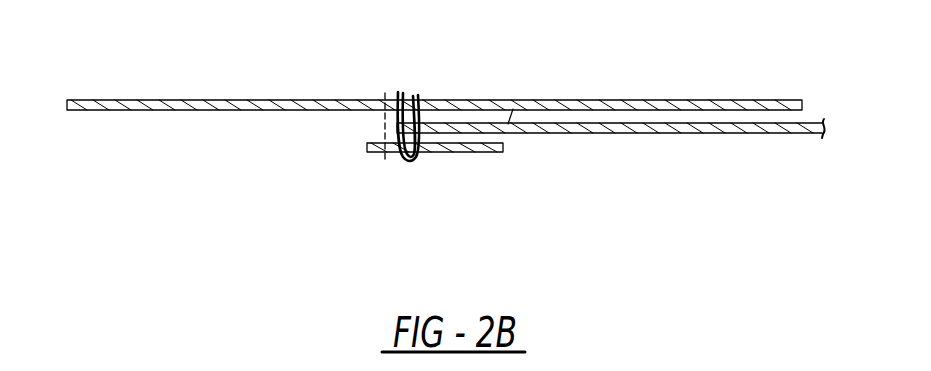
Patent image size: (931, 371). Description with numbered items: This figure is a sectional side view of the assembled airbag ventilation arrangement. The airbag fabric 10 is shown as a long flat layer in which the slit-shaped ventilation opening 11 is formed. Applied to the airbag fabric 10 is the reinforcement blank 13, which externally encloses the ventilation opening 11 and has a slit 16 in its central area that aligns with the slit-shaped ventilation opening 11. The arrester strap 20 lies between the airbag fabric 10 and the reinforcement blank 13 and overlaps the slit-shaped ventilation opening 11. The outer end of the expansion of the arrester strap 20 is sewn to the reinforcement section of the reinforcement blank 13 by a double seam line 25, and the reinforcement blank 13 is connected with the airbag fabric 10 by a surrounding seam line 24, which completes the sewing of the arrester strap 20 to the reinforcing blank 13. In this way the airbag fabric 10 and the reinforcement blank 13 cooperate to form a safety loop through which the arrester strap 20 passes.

The airbag fabric 10 is at (740, 108).
The slit-shaped ventilation opening 11 is at (424, 107).
The reinforcement blank 13 is at (483, 147).
The slit 16 is at (428, 150).
The arrester strap 20 is at (742, 130).
The surrounding seam line 24 is at (380, 124).
The double seam line 25 is at (400, 158).